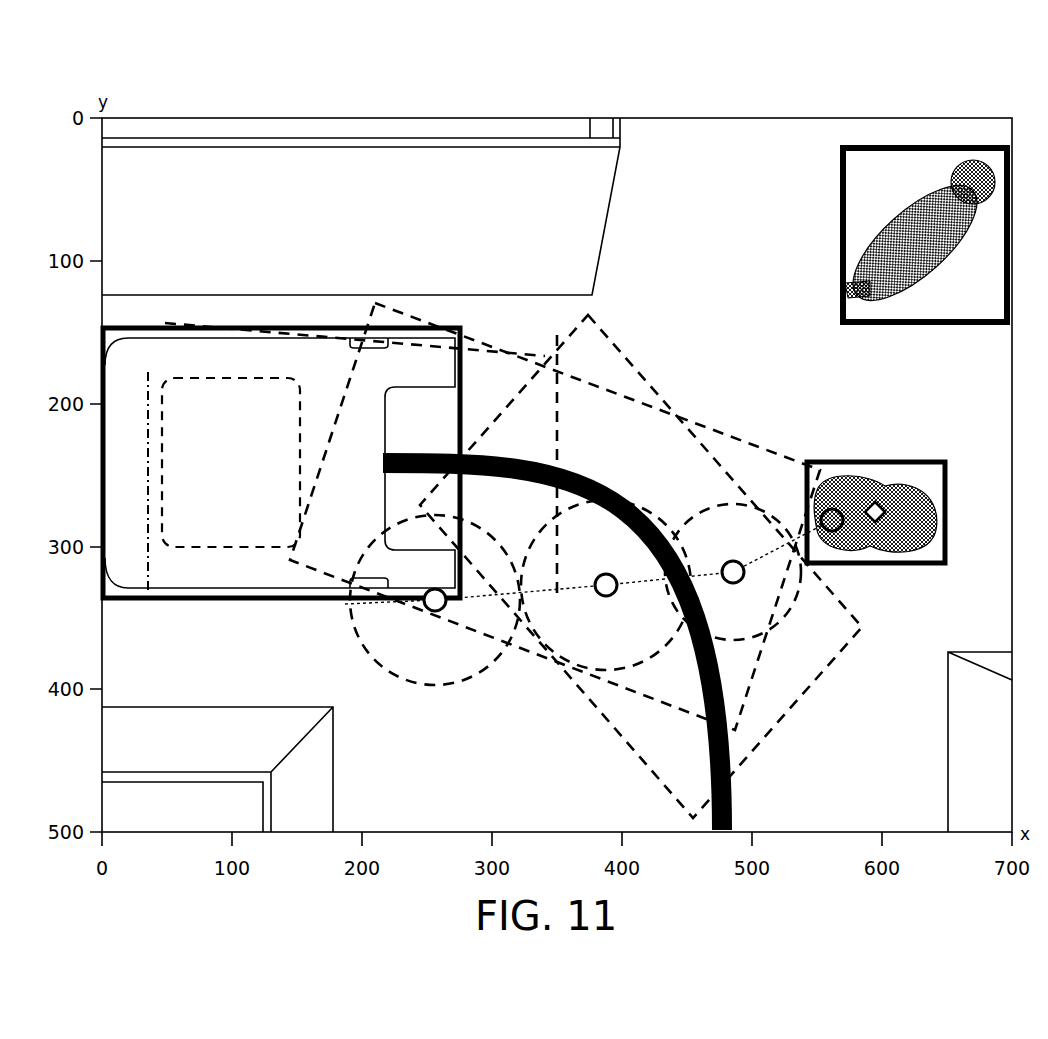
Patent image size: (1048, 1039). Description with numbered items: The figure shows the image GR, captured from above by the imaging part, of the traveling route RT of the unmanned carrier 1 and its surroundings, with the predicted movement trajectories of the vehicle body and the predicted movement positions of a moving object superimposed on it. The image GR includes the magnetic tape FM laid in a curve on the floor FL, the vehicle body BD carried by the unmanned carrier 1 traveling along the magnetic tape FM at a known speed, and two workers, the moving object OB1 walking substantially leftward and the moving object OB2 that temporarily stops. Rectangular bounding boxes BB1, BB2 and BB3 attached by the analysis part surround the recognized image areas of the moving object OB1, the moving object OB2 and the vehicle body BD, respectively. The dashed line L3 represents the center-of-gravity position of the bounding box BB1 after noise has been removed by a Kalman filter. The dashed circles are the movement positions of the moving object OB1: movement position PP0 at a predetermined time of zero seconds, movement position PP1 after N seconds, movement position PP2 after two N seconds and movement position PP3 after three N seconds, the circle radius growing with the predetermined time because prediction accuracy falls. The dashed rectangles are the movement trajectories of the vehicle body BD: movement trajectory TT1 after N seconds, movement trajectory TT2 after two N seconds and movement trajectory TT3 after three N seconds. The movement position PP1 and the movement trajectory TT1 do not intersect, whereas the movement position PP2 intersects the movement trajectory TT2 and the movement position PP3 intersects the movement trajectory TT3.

The image GR is at (940, 110).
The unmanned carrier 1 is at (192, 555).
The vehicle body BD is at (150, 592).
The bounding box BB1 is at (915, 566).
The bounding box BB2 is at (852, 324).
The bounding box BB3 is at (235, 600).
The moving object OB1 is at (902, 490).
The moving object OB2 is at (968, 260).
The traveling route RT is at (630, 500).
The magnetic tape FM is at (733, 798).
The dashed line L3 is at (810, 600).
The floor FL is at (495, 804).
The movement trajectory TT1 is at (492, 662).
The movement trajectory TT2 is at (588, 372).
The movement trajectory TT3 is at (625, 360).
The movement position PP0 is at (832, 507).
The movement position PP1 is at (733, 558).
The movement position PP2 is at (600, 660).
The movement position PP3 is at (400, 688).